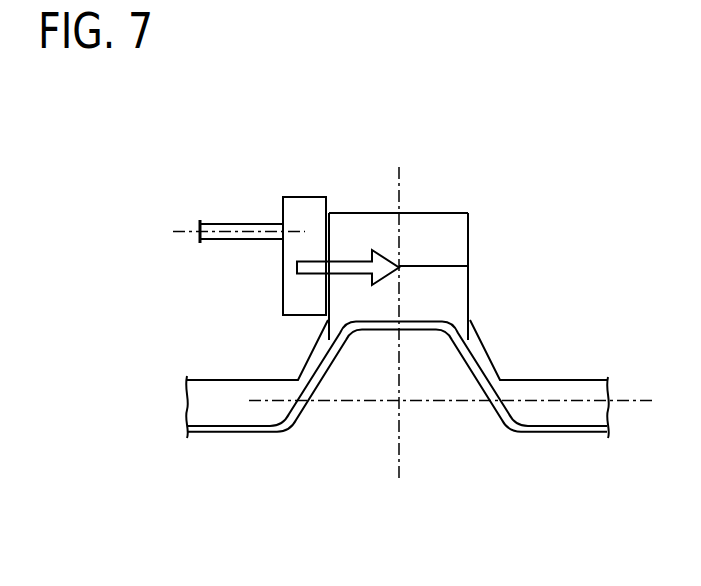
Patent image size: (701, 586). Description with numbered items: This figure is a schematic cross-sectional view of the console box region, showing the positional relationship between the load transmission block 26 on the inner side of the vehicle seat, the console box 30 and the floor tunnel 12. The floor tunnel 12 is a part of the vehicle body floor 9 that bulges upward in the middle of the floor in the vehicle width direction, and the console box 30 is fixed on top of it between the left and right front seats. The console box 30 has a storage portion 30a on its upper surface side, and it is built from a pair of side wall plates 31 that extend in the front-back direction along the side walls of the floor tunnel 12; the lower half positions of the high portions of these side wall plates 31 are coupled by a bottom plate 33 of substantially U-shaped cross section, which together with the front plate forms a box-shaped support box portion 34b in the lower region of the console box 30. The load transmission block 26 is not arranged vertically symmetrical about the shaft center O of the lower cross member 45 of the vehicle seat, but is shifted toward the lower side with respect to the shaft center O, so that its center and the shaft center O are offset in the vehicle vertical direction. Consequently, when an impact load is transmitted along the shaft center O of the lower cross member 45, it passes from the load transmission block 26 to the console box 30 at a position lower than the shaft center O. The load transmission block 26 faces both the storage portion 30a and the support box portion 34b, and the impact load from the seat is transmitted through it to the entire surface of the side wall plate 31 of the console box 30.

The vehicle body floor 9 is at (585, 379).
The floor tunnel 12 is at (485, 352).
The load transmission block 26 is at (311, 205).
The console box 30 is at (403, 239).
The storage portion 30a is at (423, 220).
The side wall plate 31 is at (470, 257).
The bottom plate 33 is at (440, 266).
The support box portion 34b is at (428, 297).
The lower cross member 45 is at (243, 229).
The shaft center O is at (180, 236).